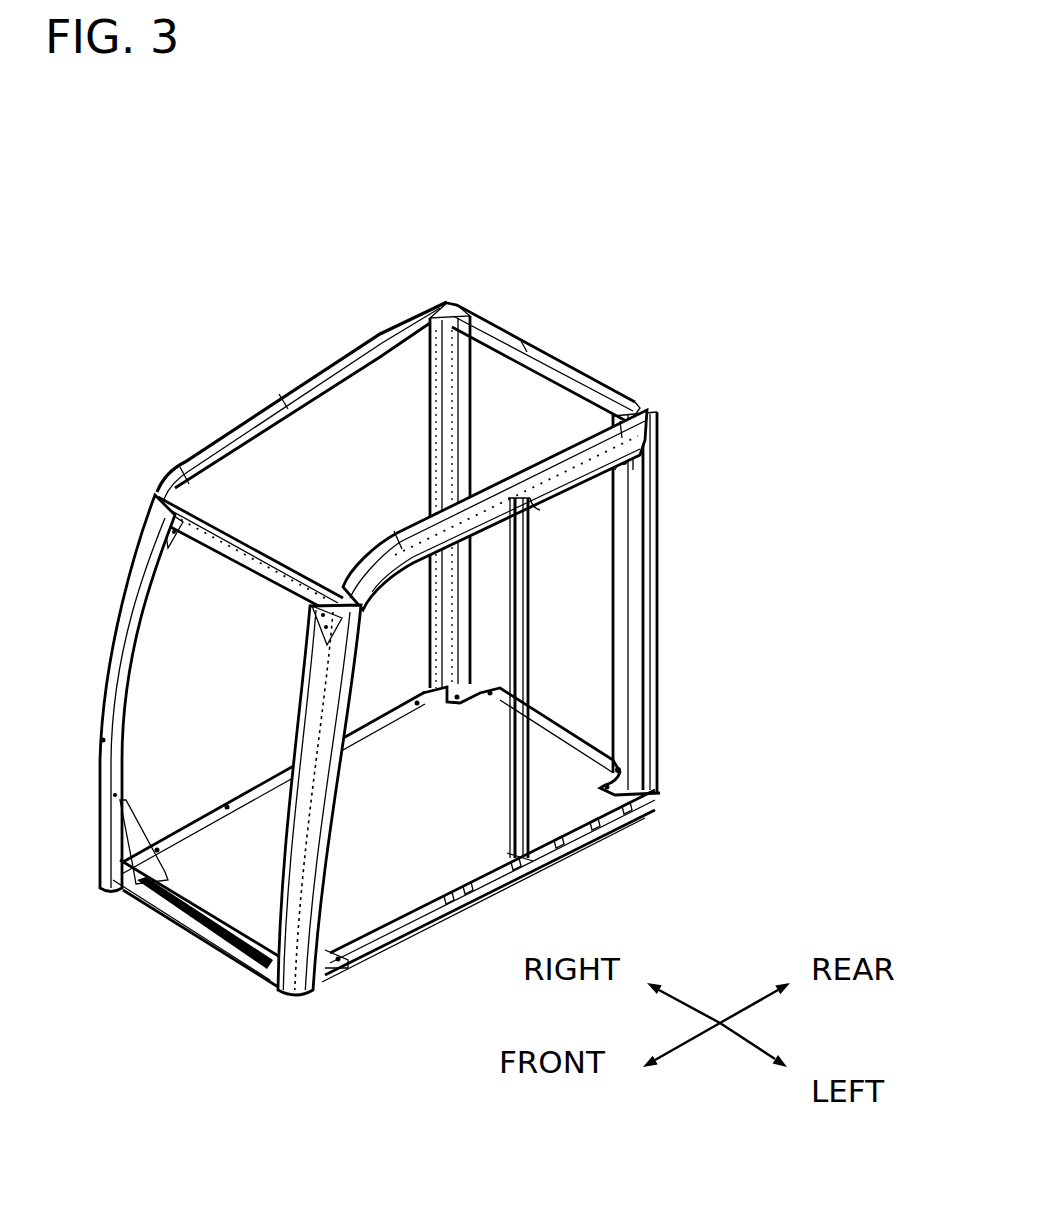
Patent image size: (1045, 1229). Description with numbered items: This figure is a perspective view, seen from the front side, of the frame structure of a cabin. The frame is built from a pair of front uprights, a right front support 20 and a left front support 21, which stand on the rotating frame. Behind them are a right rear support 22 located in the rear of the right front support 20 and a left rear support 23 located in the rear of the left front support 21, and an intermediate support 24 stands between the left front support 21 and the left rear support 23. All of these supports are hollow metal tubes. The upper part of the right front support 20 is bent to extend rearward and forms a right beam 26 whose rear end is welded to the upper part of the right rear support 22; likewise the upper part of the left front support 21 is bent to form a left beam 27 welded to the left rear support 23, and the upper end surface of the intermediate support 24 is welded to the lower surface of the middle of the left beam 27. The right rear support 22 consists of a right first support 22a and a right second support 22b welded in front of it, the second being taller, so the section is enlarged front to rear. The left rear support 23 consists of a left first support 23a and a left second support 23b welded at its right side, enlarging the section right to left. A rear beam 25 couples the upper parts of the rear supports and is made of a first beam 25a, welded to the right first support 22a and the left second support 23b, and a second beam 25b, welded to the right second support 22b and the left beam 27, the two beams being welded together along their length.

The right front support 20 is at (127, 725).
The left front support 21 is at (317, 815).
The right rear support 22 is at (570, 163).
The right first support 22a is at (468, 302).
The right second support 22b is at (442, 310).
The left rear support 23 is at (827, 370).
The left first support 23a is at (650, 503).
The left second support 23b is at (636, 403).
The intermediate support 24 is at (508, 777).
The rear beam 25 is at (727, 250).
The first beam 25a is at (610, 393).
The second beam 25b is at (523, 357).
The right beam 26 is at (247, 427).
The left beam 27 is at (415, 532).